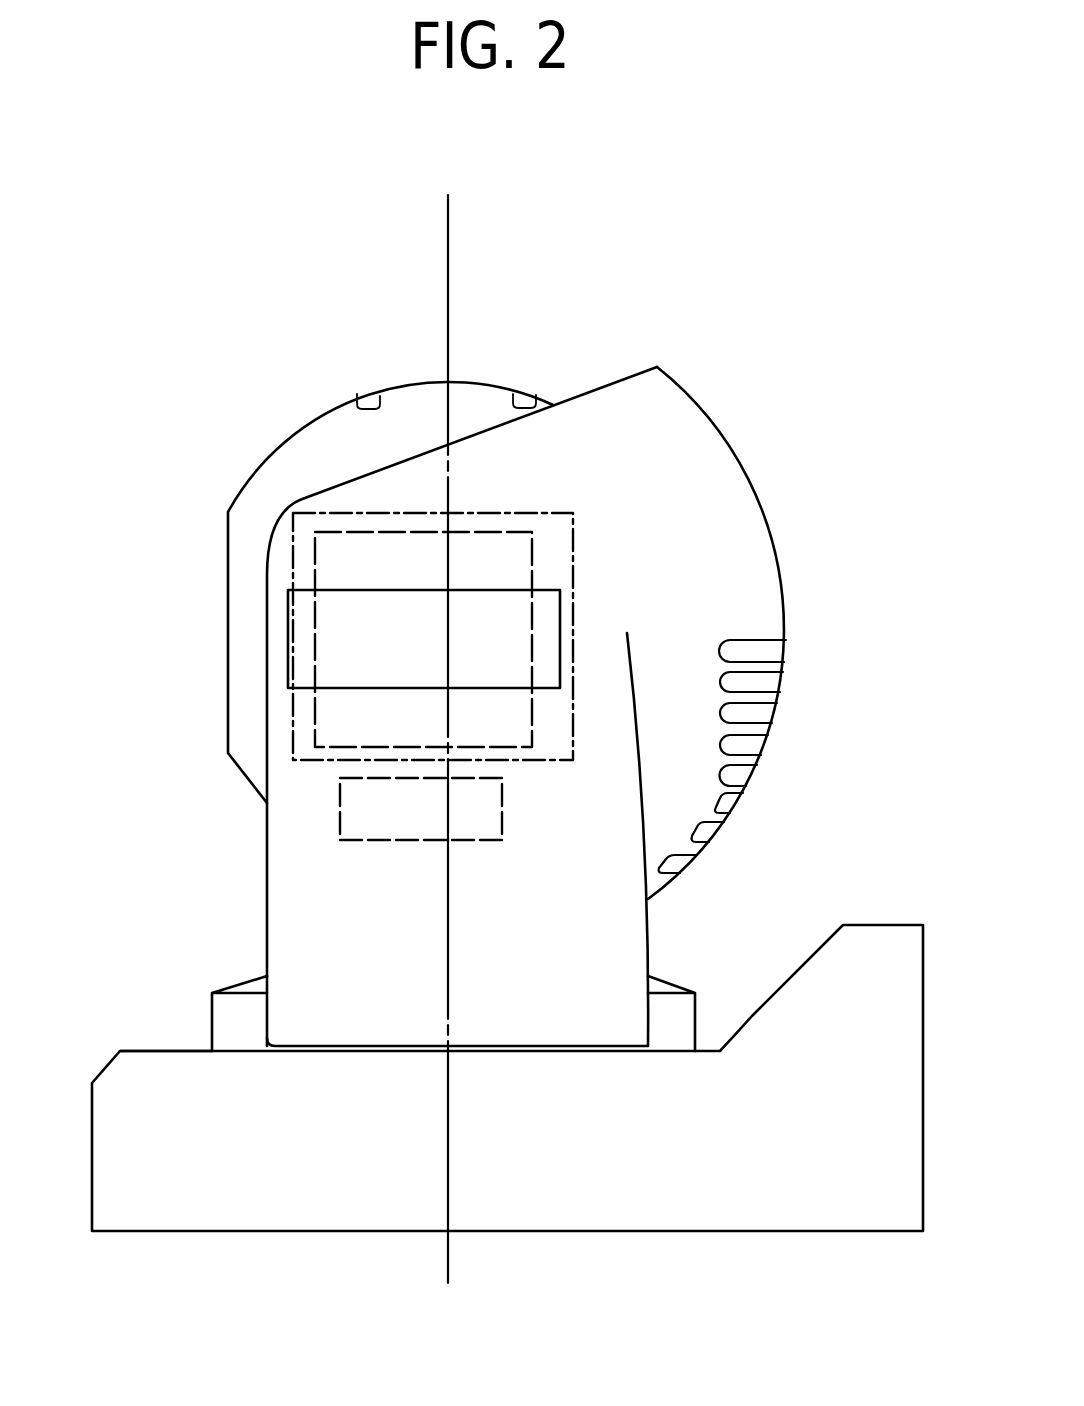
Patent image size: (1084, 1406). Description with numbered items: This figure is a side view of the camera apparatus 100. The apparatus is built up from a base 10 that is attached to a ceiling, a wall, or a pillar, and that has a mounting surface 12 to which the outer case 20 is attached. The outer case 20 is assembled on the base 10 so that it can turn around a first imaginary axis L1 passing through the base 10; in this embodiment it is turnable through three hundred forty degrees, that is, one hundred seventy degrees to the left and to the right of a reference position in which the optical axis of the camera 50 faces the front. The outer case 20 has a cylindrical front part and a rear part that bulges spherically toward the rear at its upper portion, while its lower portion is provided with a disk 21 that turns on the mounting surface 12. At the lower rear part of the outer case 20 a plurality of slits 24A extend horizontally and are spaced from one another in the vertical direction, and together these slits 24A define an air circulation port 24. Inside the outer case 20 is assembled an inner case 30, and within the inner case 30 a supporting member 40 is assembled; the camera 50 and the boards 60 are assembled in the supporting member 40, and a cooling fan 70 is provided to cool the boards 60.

The camera apparatus 100 is at (623, 243).
The base 10 is at (92, 1097).
The mounting surface 12 is at (190, 1047).
The outer case 20 is at (748, 473).
The disk 21 is at (667, 975).
The air circulation port 24 is at (753, 720).
The slits 24A is at (752, 651).
The inner case 30 is at (252, 473).
The supporting member 40 is at (573, 547).
The camera 50 is at (290, 680).
The boards 60 is at (520, 530).
The cooling fan 70 is at (370, 843).
The first imaginary axis L1 is at (448, 240).